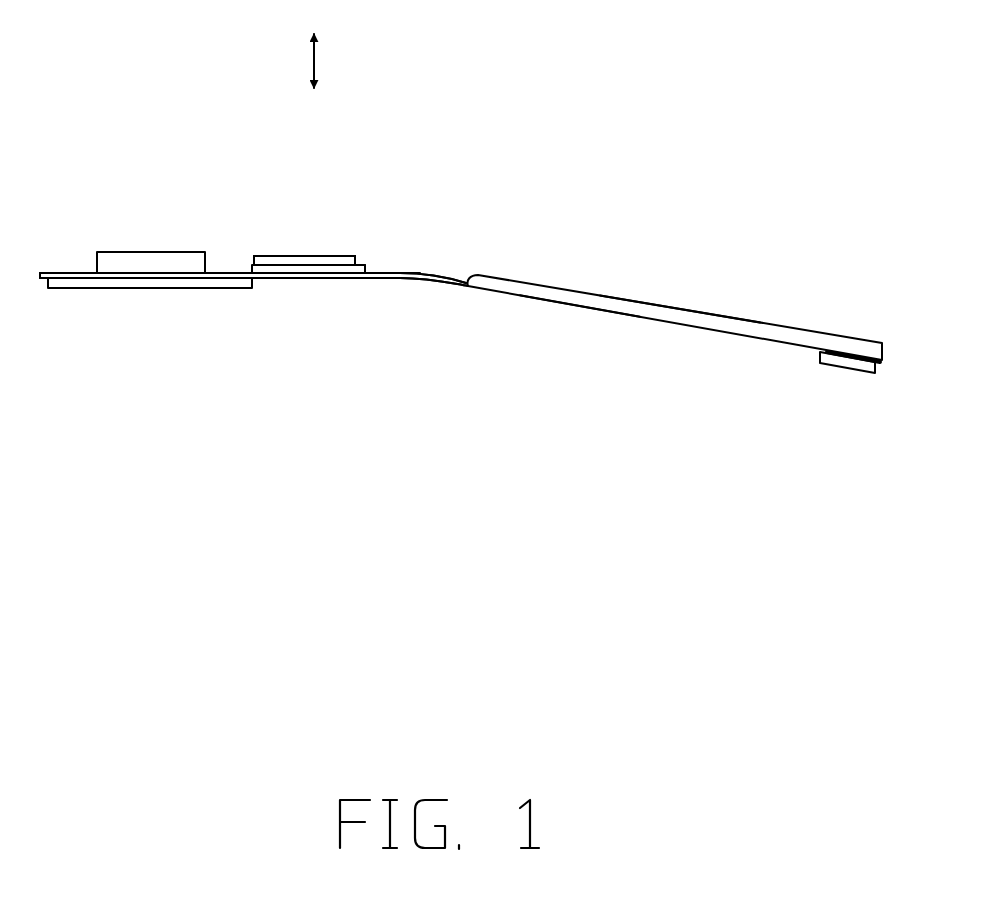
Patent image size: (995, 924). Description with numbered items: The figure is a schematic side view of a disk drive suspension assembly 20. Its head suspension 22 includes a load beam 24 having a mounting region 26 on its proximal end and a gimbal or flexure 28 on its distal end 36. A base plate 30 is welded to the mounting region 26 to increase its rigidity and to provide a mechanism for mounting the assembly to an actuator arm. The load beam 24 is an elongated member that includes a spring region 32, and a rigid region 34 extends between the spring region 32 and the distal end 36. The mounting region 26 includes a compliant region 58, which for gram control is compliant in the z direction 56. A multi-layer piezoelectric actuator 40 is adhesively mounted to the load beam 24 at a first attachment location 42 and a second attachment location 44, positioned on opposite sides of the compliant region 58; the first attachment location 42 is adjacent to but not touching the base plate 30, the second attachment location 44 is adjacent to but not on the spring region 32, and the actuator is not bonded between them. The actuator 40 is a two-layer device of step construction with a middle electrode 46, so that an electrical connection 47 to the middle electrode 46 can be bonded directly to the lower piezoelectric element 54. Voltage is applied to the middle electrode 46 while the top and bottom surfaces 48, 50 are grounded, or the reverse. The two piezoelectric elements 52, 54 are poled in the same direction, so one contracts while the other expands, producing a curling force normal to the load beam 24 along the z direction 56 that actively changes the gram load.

The disk drive suspension assembly 20 is at (313, 414).
The head suspension 22 is at (559, 283).
The load beam 24 is at (568, 303).
The mounting region 26 is at (64, 273).
The gimbal or flexure 28 is at (881, 358).
The base plate 30 is at (146, 253).
The spring region 32 is at (424, 264).
The rigid region 34 is at (677, 305).
The distal end 36 is at (835, 374).
The multi-layer piezoelectric actuator 40 is at (275, 248).
The first attachment location 42 is at (270, 277).
The second attachment location 44 is at (360, 278).
The middle electrode 46 is at (352, 266).
The electrical connection 47 is at (399, 208).
The top surface 48 is at (326, 257).
The bottom surface 50 is at (338, 278).
The piezoelectric element 52 is at (295, 263).
The lower piezoelectric element 54 is at (293, 273).
The z direction 56 is at (318, 60).
The compliant region 58 is at (308, 278).